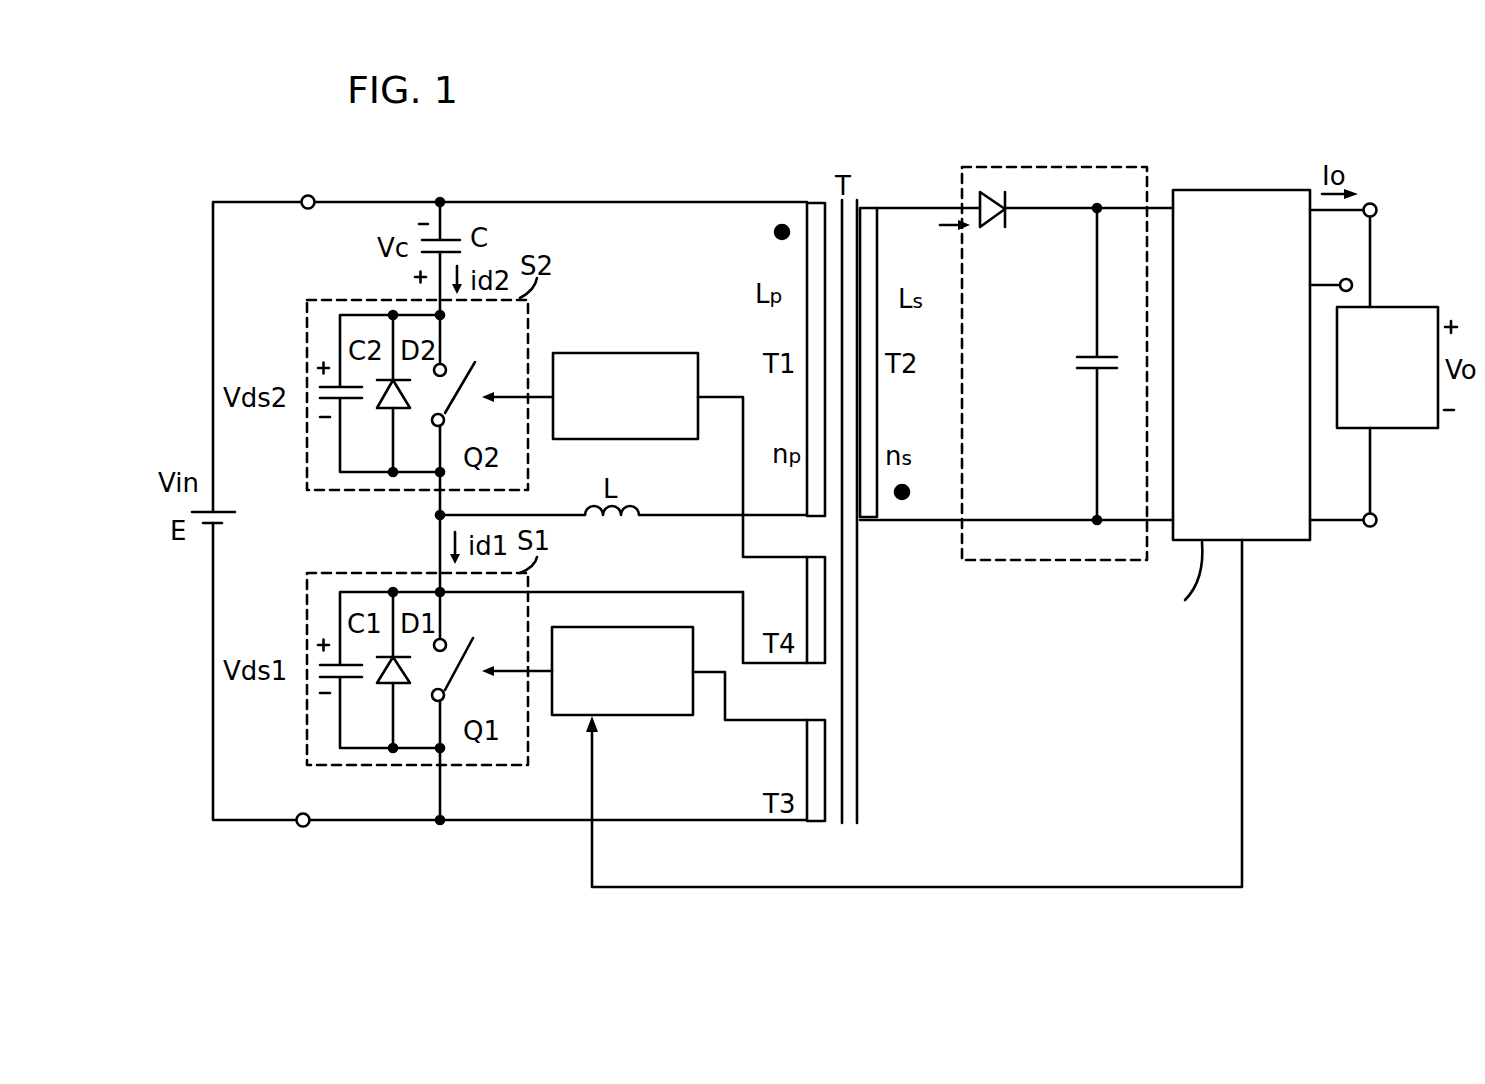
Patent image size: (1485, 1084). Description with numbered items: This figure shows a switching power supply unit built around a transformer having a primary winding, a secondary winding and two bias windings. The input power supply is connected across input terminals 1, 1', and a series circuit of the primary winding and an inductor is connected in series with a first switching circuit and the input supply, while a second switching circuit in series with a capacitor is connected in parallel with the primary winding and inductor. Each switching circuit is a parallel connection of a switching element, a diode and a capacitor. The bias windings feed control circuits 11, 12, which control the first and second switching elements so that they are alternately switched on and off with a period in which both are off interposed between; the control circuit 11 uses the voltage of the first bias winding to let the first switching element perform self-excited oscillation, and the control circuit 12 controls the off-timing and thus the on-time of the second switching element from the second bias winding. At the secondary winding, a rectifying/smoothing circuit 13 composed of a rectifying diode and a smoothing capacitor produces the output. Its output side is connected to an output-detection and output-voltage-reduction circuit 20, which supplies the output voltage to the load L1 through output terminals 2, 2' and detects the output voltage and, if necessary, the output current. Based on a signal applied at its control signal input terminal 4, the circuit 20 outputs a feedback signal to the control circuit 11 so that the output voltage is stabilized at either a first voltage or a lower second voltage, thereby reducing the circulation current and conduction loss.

The input terminal 1 is at (309, 186).
The input terminal 1' is at (307, 839).
The output terminal 2 is at (1372, 196).
The output terminal 2' is at (1370, 540).
The control signal input terminal 4 is at (1346, 278).
The control circuit 11 is at (668, 717).
The control circuit 12 is at (643, 352).
The rectifying/smoothing circuit 13 is at (1060, 118).
The output-detection and output-voltage-reduction circuit 20 is at (1275, 190).
The load L1 is at (1427, 305).